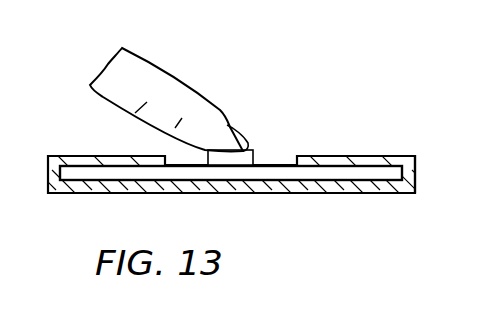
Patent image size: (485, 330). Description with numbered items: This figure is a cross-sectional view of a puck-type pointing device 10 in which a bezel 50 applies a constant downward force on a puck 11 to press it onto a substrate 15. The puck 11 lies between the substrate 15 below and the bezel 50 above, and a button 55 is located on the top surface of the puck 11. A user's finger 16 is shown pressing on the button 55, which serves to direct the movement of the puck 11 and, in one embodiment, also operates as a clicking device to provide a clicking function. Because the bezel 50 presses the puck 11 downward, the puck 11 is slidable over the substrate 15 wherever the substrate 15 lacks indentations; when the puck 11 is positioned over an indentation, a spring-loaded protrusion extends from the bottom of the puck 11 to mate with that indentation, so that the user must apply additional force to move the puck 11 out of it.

The puck-type pointing device 10 is at (302, 69).
The puck 11 is at (180, 176).
The substrate 15 is at (298, 195).
The user's finger 16 is at (163, 68).
The bezel 50 is at (338, 156).
The button 55 is at (258, 158).